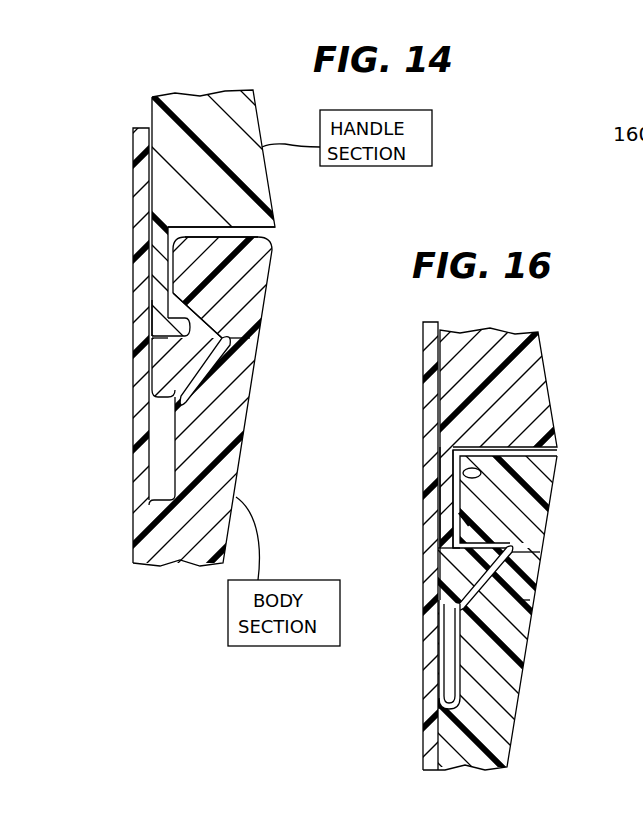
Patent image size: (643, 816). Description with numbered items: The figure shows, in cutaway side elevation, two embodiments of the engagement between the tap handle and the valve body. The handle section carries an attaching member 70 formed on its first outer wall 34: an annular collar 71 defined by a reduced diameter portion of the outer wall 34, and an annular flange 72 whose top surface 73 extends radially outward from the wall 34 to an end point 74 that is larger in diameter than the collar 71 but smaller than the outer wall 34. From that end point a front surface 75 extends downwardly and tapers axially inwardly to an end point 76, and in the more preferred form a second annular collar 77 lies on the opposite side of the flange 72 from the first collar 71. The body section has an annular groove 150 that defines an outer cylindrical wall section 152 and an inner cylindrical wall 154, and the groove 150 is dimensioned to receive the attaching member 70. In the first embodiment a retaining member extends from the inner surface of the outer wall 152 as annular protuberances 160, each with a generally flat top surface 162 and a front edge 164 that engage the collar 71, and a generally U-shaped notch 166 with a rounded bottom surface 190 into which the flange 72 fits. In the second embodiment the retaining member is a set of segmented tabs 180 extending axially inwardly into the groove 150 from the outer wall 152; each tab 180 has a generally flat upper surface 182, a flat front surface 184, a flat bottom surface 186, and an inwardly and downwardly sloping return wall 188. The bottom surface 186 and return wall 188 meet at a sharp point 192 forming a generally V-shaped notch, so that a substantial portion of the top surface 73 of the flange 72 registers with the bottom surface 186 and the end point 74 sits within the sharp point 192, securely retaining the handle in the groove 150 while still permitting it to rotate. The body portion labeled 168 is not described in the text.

In FIG. 14, the attaching member 70 is at (206, 66).
In FIG. 14, the first outer wall 34 is at (258, 185).
In FIG. 16, the first outer wall 34 is at (547, 360).
In FIG. 14, the flat top surface 162 is at (262, 232).
In FIG. 14, the front edge 164 is at (173, 268).
In FIG. 14, the annular protuberances 160 is at (213, 263).
In FIG. 14, the U-shaped notch 166 is at (188, 317).
In FIG. 14, the top surface 73 is at (182, 318).
In FIG. 16, the top surface 73 is at (455, 540).
In FIG. 14, the end point 74 is at (237, 342).
In FIG. 16, the end point 74 is at (513, 563).
In FIG. 14, the rounded bottom surface 190 is at (213, 378).
In FIG. 14, the annular flange 72 is at (173, 353).
In FIG. 16, the annular flange 72 is at (473, 563).
In FIG. 14, the front surface 75 is at (168, 372).
In FIG. 16, the front surface 75 is at (527, 603).
In FIG. 14, the end point 76 is at (160, 397).
In FIG. 16, the end point 76 is at (440, 710).
In FIG. 14, the body section 168 is at (177, 432).
In FIG. 14, the annular groove 150 is at (165, 475).
In FIG. 14, the inner cylindrical wall 154 is at (133, 527).
In FIG. 16, the inner cylindrical wall 154 is at (421, 673).
In FIG. 14, the annular collar 71 is at (152, 250).
In FIG. 16, the annular collar 71 is at (453, 495).
In FIG. 16, the flat upper surface 182 is at (540, 443).
In FIG. 16, the flat front surface 184 is at (465, 473).
In FIG. 16, the flat bottom surface 186 is at (455, 512).
In FIG. 16, the segmented tabs 180 is at (507, 543).
In FIG. 16, the sharp point 192 is at (507, 548).
In FIG. 16, the return wall 188 is at (465, 583).
In FIG. 16, the second annular collar 77 is at (447, 642).
In FIG. 16, the outer cylindrical wall section 152 is at (523, 693).